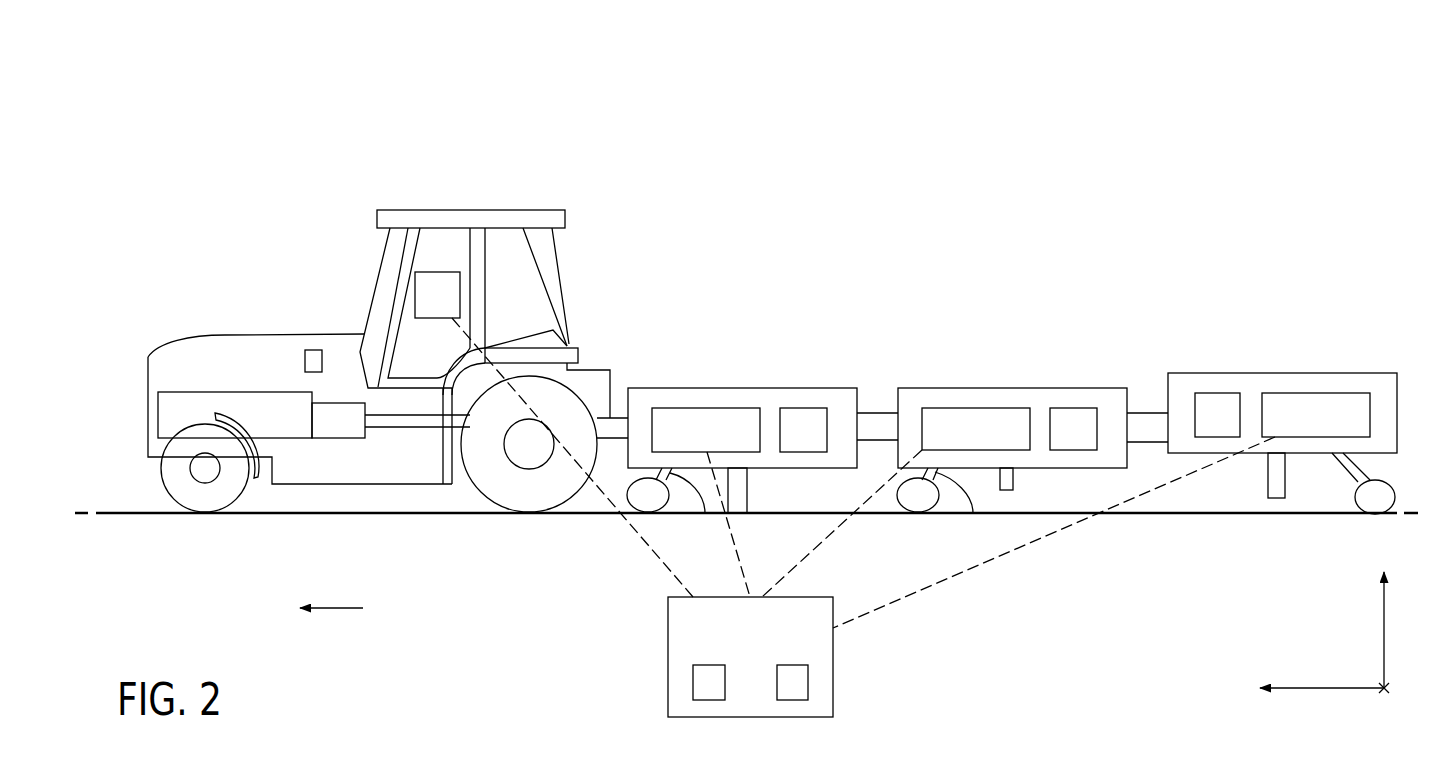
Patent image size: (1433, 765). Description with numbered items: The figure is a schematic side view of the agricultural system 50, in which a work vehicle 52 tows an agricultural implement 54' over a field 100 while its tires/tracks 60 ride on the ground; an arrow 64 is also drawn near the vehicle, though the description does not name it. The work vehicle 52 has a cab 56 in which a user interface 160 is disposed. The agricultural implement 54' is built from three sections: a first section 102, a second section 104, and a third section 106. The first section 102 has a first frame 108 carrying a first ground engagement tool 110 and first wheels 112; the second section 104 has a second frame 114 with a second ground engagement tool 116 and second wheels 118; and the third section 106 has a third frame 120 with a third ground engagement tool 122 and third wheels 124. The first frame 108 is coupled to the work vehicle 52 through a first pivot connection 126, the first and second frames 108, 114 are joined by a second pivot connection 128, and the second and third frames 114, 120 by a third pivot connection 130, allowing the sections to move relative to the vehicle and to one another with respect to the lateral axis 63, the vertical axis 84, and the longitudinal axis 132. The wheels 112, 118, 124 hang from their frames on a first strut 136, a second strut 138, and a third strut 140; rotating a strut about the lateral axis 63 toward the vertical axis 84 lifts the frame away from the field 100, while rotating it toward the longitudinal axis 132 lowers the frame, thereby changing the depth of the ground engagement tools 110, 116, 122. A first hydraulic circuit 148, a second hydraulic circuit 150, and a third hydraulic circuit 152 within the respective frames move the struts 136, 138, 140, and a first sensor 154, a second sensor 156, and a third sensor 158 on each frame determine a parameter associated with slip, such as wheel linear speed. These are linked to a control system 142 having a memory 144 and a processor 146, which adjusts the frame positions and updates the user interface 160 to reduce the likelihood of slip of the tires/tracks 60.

The agricultural system 50 is at (1233, 78).
The work vehicle 52 is at (366, 350).
The agricultural implement 54' is at (1009, 357).
The cab 56 is at (385, 289).
The work vehicle tires/tracks 60 is at (178, 530).
The lateral axis 63 is at (1391, 692).
The direction of travel 64 is at (337, 608).
The vertical axis 84 is at (1383, 610).
The field 100 is at (513, 618).
The first section 102 is at (725, 412).
The second section 104 is at (992, 411).
The third section 106 is at (1276, 403).
The first frame 108 is at (707, 387).
The first ground engagement tool 110 is at (747, 490).
The first wheels 112 is at (648, 513).
The second frame 114 is at (975, 387).
The second ground engagement tool 116 is at (1013, 480).
The second wheels 118 is at (918, 513).
The third frame 120 is at (1330, 372).
The third ground engagement tool 122 is at (1285, 475).
The third wheels 124 is at (1360, 505).
The first pivot connection 126 is at (620, 417).
The second pivot connection 128 is at (875, 412).
The third pivot connection 130 is at (1145, 412).
The longitudinal axis 132 is at (1343, 687).
The first strut 136 is at (696, 513).
The second strut 138 is at (964, 511).
The third strut 140 is at (1365, 467).
The control system 142 is at (736, 657).
The memory 144 is at (693, 680).
The processor 146 is at (808, 680).
The first hydraulic circuit 148 is at (720, 408).
The second hydraulic circuit 150 is at (990, 408).
The third hydraulic circuit 152 is at (1348, 393).
The first sensor 154 is at (810, 408).
The second sensor 156 is at (1080, 408).
The third sensor 158 is at (1215, 393).
The user interface 160 is at (438, 320).